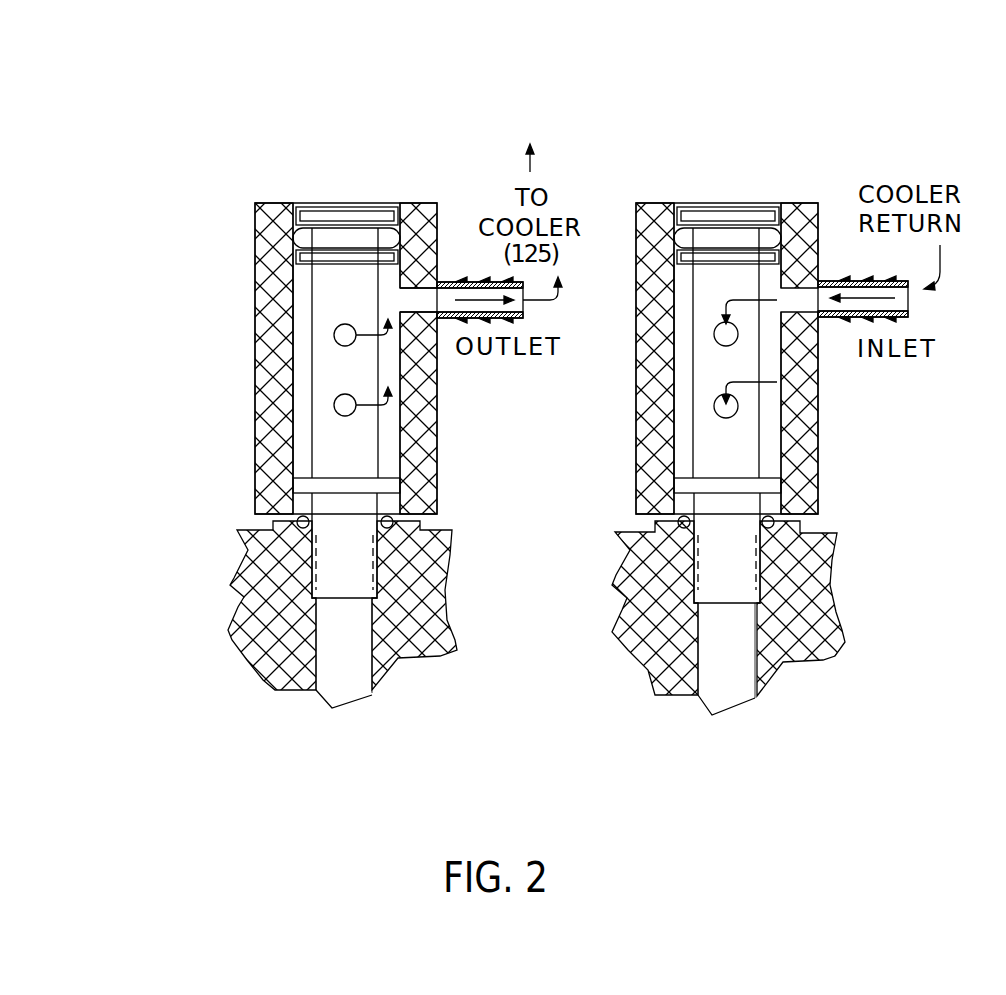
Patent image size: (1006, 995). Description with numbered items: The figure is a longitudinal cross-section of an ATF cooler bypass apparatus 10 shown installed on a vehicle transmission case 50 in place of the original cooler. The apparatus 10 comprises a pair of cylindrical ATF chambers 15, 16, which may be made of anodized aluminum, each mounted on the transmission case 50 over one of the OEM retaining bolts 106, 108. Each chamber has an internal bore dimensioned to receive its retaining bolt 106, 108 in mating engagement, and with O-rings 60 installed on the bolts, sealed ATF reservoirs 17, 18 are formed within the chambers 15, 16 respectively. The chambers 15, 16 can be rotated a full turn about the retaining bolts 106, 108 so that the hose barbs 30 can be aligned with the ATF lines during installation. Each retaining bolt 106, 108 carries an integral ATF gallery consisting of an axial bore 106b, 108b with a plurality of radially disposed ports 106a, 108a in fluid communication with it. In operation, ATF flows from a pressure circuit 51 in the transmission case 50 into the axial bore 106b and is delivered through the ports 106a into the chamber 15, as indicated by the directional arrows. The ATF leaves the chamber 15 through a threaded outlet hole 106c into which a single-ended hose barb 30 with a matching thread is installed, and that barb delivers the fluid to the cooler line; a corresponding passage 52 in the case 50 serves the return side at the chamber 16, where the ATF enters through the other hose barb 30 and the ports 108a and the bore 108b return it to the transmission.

The ATF cooler bypass apparatus 10 is at (546, 102).
The cylindrical ATF chamber 15 is at (293, 462).
The cylindrical ATF chamber 16 is at (820, 450).
The sealed ATF reservoir 17 is at (300, 287).
The sealed ATF reservoir 18 is at (680, 462).
The hose barb 30 is at (523, 318).
The transmission case 50 is at (238, 626).
The pressure circuit 51 is at (318, 690).
The housing inlet passage 52 is at (702, 692).
The O-ring 60 is at (304, 233).
The OEM retaining bolt 106 is at (345, 212).
The radially disposed ports 106a is at (345, 405).
The axial bore 106b is at (350, 575).
The threaded outlet hole 106c is at (425, 297).
The OEM retaining bolt 108 is at (724, 212).
The radially disposed ports 108a is at (715, 406).
The axial bore 108b is at (728, 608).